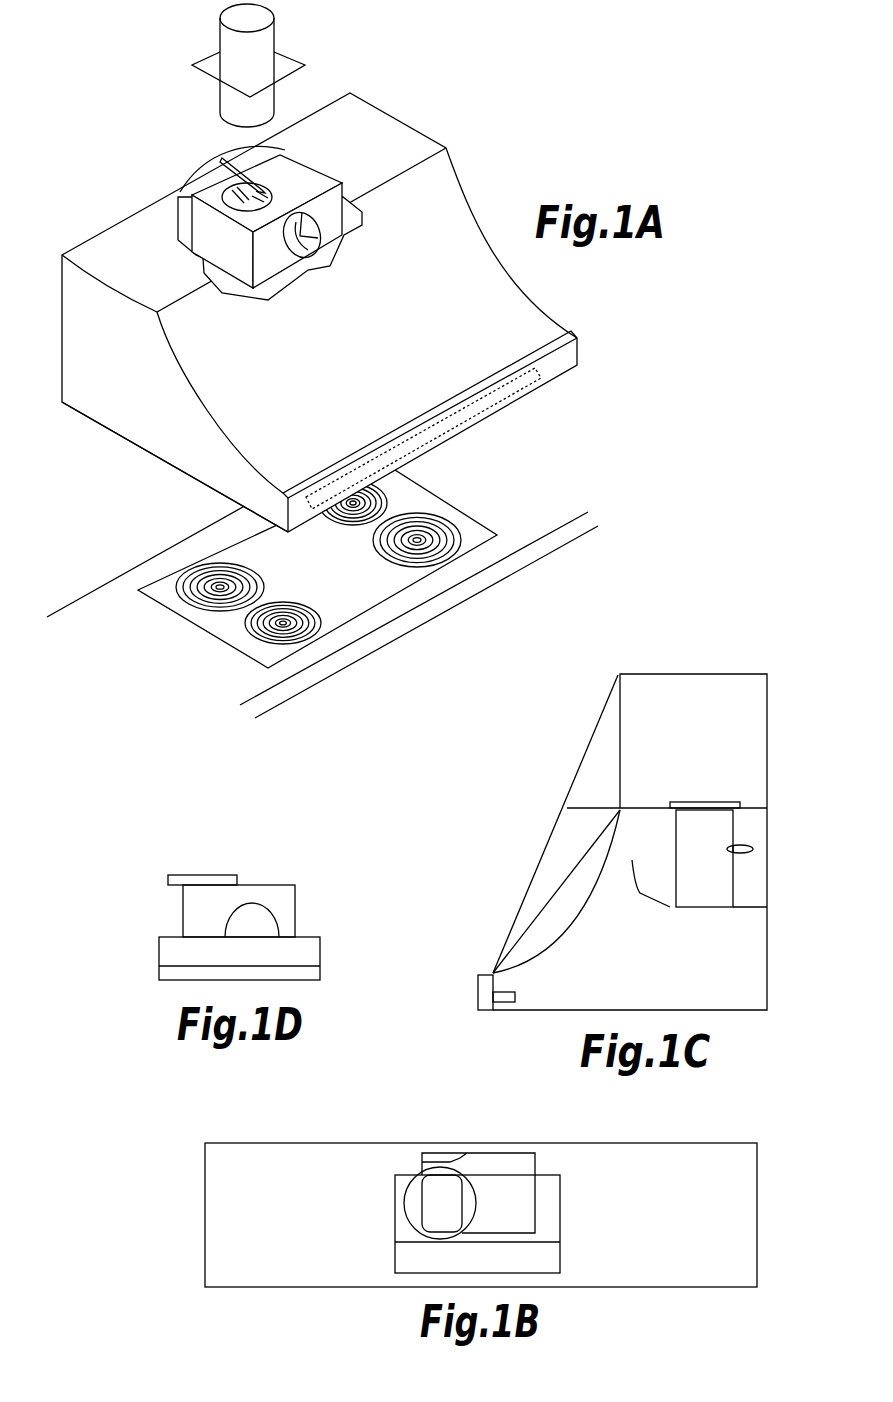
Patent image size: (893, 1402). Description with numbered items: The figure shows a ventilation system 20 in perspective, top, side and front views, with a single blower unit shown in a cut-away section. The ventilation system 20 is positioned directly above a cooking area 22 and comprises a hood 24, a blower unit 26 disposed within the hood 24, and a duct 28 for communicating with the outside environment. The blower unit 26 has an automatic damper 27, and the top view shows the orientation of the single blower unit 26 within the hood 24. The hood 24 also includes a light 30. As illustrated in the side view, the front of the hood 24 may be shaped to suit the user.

In FIG. 1A, the ventilation system 20 is at (350, 268).
In FIG. 1A, the cooking area 22 is at (430, 520).
In FIG. 1A, the hood 24 is at (508, 292).
In FIG. 1C, the hood 24 is at (753, 982).
In FIG. 1B, the hood 24 is at (745, 1235).
In FIG. 1A, the blower unit 26 is at (200, 208).
In FIG. 1C, the blower unit 26 is at (757, 882).
In FIG. 1D, the blower unit 26 is at (188, 921).
In FIG. 1B, the blower unit 26 is at (550, 1205).
In FIG. 1A, the automatic damper 27 is at (243, 166).
In FIG. 1A, the duct 28 is at (270, 37).
In FIG. 1A, the light 30 is at (510, 404).
In FIG. 1C, the light 30 is at (507, 1005).